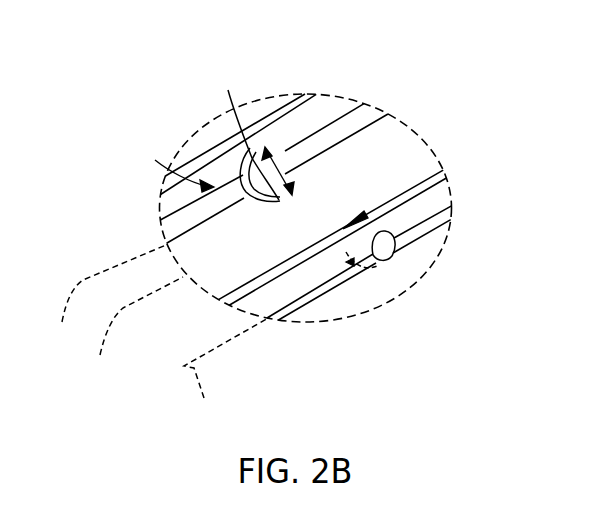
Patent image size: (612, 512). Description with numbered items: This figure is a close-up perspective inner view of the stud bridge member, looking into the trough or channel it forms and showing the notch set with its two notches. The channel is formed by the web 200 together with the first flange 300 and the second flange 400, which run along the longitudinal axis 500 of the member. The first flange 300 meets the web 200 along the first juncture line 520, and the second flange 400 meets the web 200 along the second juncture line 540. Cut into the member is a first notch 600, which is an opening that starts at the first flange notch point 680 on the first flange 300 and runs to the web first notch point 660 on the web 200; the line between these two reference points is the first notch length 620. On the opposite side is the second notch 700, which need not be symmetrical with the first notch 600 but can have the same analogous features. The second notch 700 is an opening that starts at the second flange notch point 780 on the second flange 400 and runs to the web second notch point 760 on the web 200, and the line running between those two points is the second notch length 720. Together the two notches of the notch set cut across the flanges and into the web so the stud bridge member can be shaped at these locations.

The web 200 is at (405, 143).
The first flange 300 is at (330, 110).
The second flange 400 is at (435, 200).
The longitudinal axis 500 is at (135, 328).
The first juncture line 520 is at (108, 295).
The second juncture line 540 is at (227, 369).
The first notch 600 is at (170, 170).
The first notch length 620 is at (296, 164).
The web first notch point 660 is at (278, 203).
The first flange notch point 680 is at (233, 112).
The second notch 700 is at (384, 270).
The second notch length 720 is at (352, 240).
The web second notch point 760 is at (347, 262).
The second flange notch point 780 is at (383, 231).